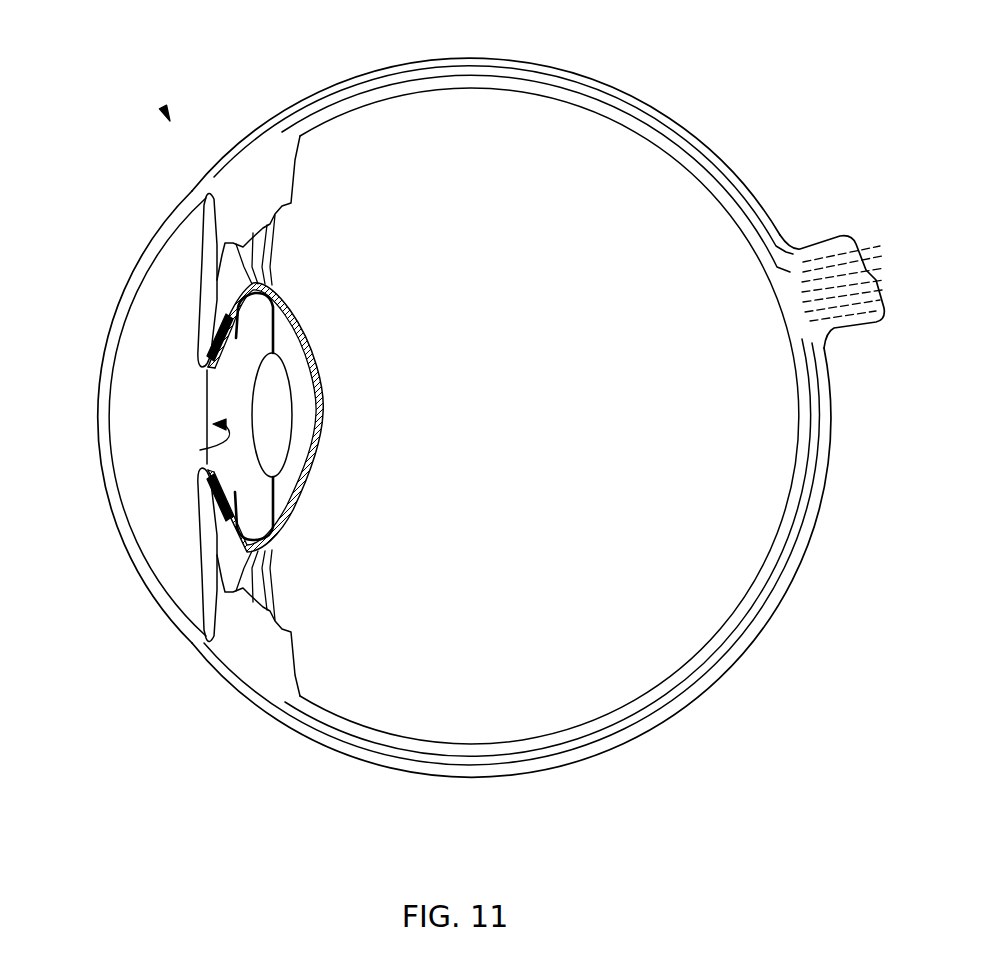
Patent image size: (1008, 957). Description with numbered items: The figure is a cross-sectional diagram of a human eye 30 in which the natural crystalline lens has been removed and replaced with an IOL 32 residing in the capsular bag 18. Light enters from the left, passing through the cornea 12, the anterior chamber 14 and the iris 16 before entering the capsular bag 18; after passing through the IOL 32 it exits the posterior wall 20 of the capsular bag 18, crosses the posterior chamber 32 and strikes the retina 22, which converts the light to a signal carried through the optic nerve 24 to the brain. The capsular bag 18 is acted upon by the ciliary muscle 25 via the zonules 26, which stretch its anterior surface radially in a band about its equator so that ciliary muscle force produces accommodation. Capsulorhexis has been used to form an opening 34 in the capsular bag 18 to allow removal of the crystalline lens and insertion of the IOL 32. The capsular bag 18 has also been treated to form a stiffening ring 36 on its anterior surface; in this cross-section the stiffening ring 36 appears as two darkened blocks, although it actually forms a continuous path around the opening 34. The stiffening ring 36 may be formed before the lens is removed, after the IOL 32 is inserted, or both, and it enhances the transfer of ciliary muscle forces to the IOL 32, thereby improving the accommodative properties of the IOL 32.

The cornea 12 is at (114, 321).
The anterior chamber 14 is at (148, 274).
The iris 16 is at (198, 305).
The capsular bag 18 is at (322, 410).
The posterior wall 20 is at (297, 318).
The retina 22 is at (640, 122).
The optic nerve 24 is at (822, 252).
The ciliary muscle 25 is at (300, 665).
The zonules 26 is at (284, 232).
The human eye 30 is at (166, 111).
The IOL 32 is at (582, 116).
The opening 34 is at (200, 450).
The stiffening ring 36 is at (220, 333).